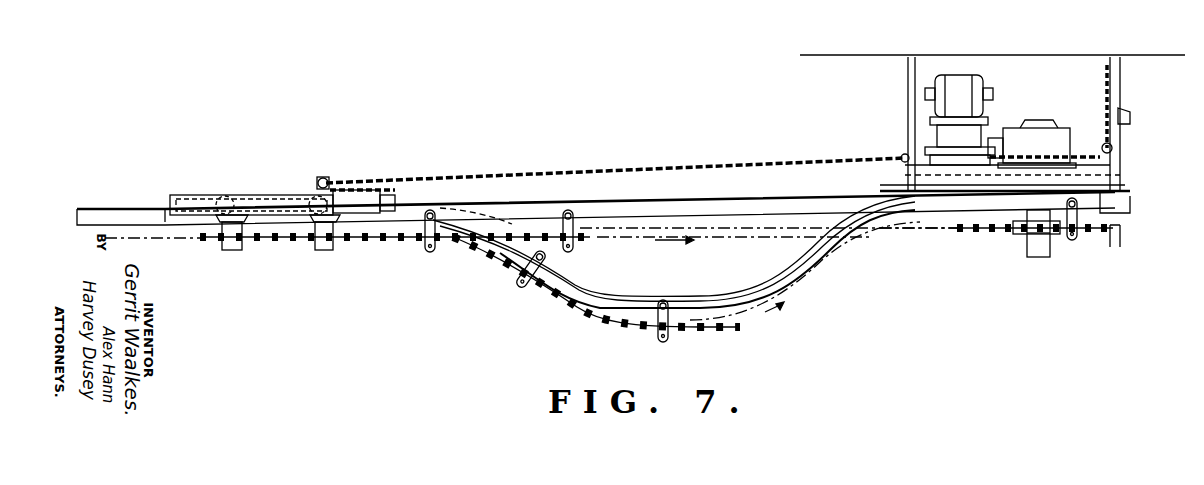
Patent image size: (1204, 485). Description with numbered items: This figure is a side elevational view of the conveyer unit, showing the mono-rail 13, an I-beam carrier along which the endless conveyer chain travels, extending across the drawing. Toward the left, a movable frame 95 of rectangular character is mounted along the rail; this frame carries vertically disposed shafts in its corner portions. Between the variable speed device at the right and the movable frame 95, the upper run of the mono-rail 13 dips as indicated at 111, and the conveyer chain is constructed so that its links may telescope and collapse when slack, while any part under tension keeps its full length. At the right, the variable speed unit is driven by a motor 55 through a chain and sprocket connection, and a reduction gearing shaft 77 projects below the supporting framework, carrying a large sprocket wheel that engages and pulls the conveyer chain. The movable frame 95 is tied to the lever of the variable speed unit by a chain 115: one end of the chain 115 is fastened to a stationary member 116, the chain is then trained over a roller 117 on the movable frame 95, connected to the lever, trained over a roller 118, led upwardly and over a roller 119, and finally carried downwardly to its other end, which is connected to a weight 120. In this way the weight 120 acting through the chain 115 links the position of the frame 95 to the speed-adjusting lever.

The mono-rail 13 is at (113, 209).
The movable frame 95 is at (217, 227).
The stationary member 116 is at (384, 191).
The roller 117 is at (323, 178).
The chain 115 is at (773, 163).
The dip 111 is at (823, 250).
The motor 55 is at (977, 80).
The roller 119 is at (1118, 66).
The weight 120 is at (1126, 117).
The roller 118 is at (1113, 148).
The shaft 77 is at (1032, 249).